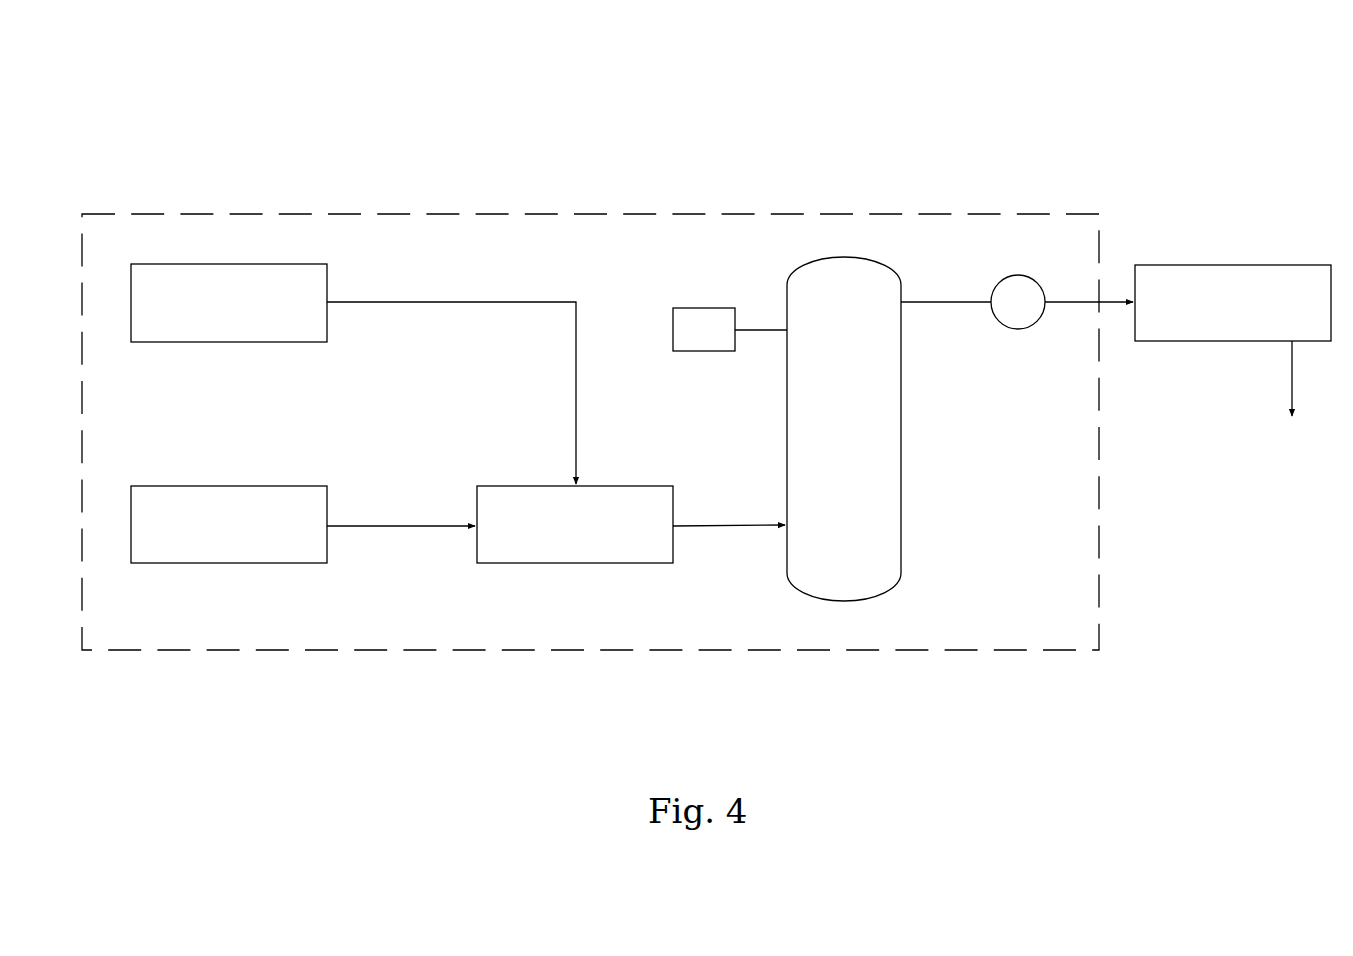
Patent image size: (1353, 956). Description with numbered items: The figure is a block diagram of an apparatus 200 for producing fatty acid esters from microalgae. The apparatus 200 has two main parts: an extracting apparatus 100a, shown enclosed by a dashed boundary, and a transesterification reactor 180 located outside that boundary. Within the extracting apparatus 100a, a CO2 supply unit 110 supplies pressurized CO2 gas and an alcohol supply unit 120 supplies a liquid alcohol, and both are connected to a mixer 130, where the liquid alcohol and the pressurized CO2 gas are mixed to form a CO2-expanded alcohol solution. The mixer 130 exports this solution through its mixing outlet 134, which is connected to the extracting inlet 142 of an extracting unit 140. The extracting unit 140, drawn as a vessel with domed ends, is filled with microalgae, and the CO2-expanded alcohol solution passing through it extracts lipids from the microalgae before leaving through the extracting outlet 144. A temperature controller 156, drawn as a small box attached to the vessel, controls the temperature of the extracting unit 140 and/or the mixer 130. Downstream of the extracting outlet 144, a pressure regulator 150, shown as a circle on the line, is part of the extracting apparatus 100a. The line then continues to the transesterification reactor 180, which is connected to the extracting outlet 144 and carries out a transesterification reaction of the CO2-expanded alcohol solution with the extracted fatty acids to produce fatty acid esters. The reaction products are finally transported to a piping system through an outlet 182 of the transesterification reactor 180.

The apparatus 200 is at (133, 64).
The extracting apparatus 100a is at (489, 211).
The CO2 supply unit 110 is at (228, 264).
The alcohol supply unit 120 is at (228, 486).
The mixer 130 is at (570, 563).
The mixing outlet 134 is at (674, 526).
The temperature controller 156 is at (688, 307).
The extracting unit 140 is at (813, 264).
The extracting inlet 142 is at (787, 517).
The extracting outlet 144 is at (902, 300).
The pressure regulator 150 is at (1018, 275).
The transesterification reactor 180 is at (1233, 265).
The outlet 182 is at (1290, 342).